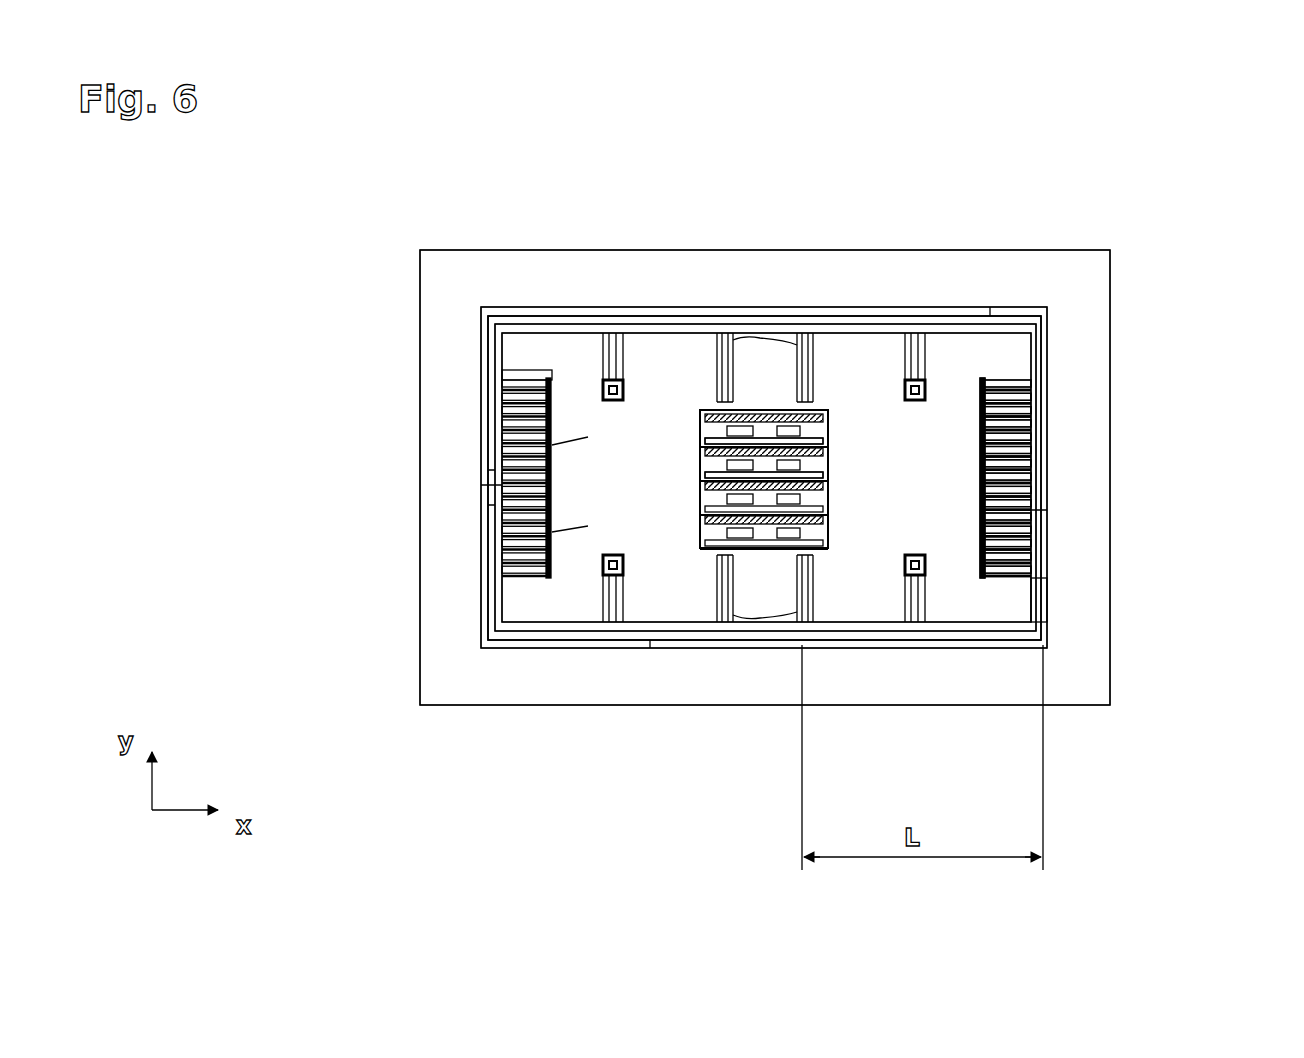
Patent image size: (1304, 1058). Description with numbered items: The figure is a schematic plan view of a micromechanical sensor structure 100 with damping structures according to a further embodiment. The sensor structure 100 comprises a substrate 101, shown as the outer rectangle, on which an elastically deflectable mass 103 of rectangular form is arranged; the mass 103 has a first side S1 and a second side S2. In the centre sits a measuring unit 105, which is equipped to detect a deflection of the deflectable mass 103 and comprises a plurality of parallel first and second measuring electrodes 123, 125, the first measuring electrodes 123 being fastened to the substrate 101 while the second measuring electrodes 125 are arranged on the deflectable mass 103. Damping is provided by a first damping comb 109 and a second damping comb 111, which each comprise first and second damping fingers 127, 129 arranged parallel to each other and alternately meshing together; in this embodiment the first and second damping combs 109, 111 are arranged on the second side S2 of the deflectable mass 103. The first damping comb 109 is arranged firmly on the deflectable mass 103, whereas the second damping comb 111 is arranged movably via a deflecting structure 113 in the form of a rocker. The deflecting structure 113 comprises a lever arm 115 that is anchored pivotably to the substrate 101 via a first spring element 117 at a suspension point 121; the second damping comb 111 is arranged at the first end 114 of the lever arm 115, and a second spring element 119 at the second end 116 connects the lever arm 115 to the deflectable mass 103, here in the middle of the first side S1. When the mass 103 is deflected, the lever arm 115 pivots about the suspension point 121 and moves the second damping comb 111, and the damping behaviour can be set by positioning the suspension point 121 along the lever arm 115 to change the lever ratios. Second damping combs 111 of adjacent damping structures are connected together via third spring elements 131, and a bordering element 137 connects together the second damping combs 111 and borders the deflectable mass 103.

The micromechanical sensor structure 100 is at (330, 236).
The substrate 101 is at (1110, 702).
The deflectable mass 103 is at (955, 417).
The measuring unit 105 is at (698, 460).
The first damping comb 109 is at (552, 445).
The second damping comb 111 is at (490, 470).
The deflecting structure 113 is at (536, 301).
The first end of the lever arm 114 is at (486, 330).
The lever arm 115 is at (640, 320).
The second end of the lever arm 116 is at (725, 334).
The first spring element 117 is at (612, 358).
The second spring element 119 is at (800, 345).
The suspension point 121 is at (612, 330).
The first measuring electrodes 123 is at (830, 438).
The second measuring electrodes 125 is at (487, 478).
The first damping fingers 127 is at (505, 410).
The second damping fingers 129 is at (520, 386).
The third spring elements 131 is at (1040, 530).
The bordering element 137 is at (1046, 594).
The first side S1 is at (995, 302).
The second side S2 is at (490, 493).